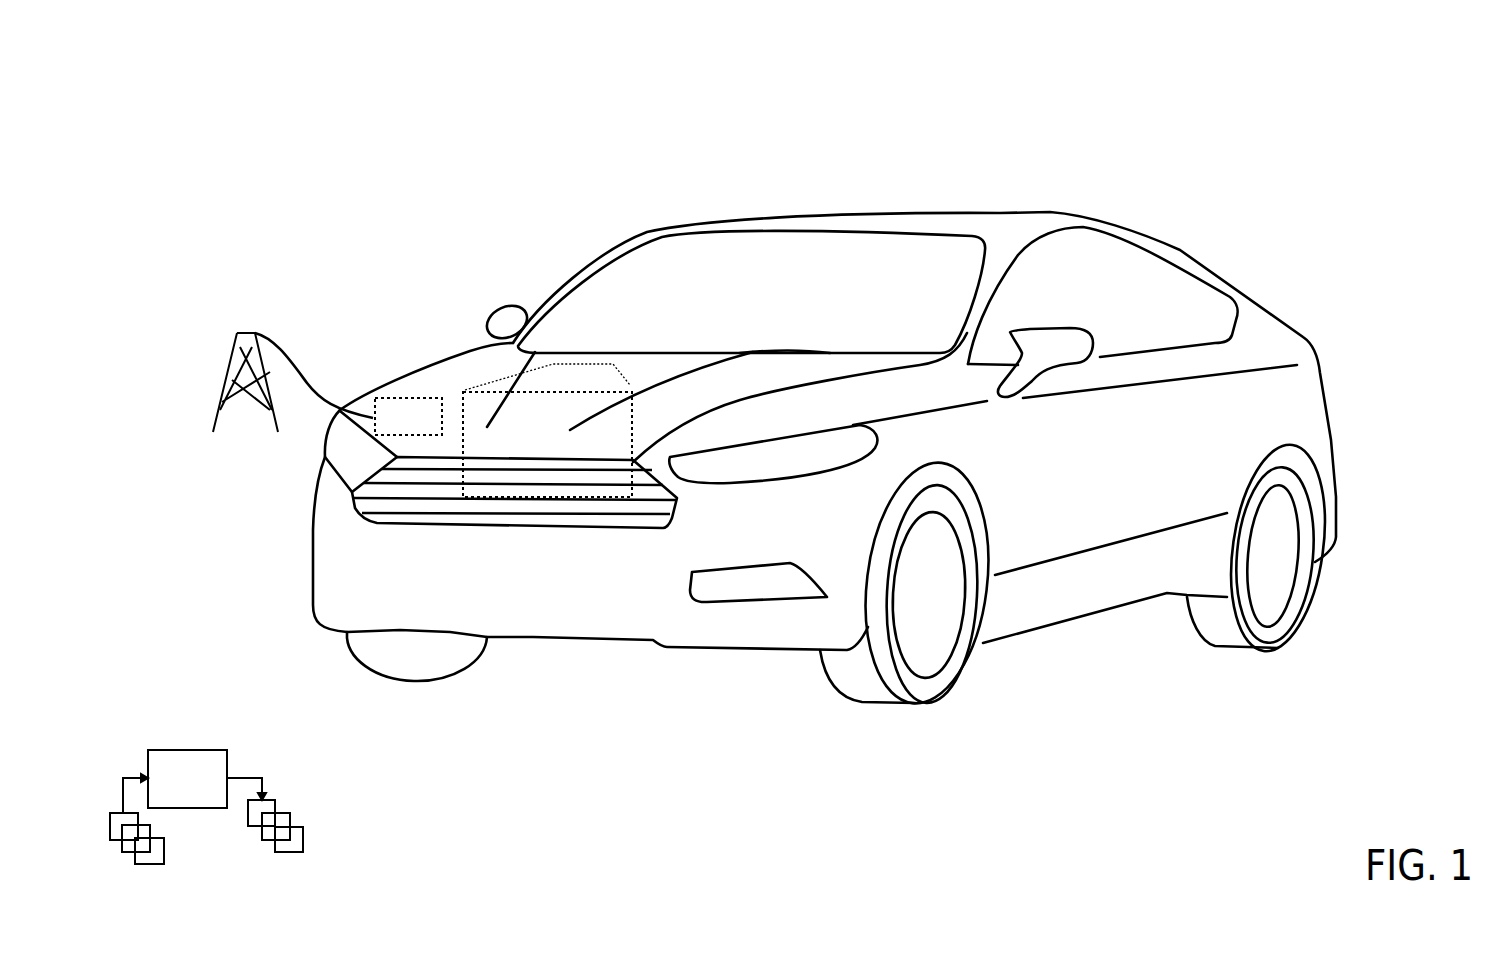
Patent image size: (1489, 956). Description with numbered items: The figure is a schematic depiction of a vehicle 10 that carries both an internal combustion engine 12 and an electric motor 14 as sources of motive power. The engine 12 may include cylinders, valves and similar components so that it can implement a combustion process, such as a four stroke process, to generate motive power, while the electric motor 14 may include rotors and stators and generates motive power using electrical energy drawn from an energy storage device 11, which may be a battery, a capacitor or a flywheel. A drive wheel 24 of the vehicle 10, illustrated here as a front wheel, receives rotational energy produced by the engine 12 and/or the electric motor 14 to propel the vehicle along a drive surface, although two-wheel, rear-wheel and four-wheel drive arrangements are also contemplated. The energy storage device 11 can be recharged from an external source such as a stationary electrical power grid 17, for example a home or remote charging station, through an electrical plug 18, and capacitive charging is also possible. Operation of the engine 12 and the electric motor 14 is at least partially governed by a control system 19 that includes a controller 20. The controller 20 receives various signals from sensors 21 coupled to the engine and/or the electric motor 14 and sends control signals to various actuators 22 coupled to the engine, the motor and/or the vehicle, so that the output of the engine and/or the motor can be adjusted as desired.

The vehicle 10 is at (229, 80).
The energy storage device 11 is at (398, 427).
The internal combustion engine 12 is at (537, 454).
The electric motor 14 is at (617, 367).
The stationary electrical power grid 17 is at (232, 345).
The electrical plug 18 is at (300, 369).
The control system 19 is at (327, 740).
The controller 20 is at (176, 790).
The sensors 21 is at (100, 868).
The actuators 22 is at (240, 852).
The drive wheel 24 is at (932, 688).